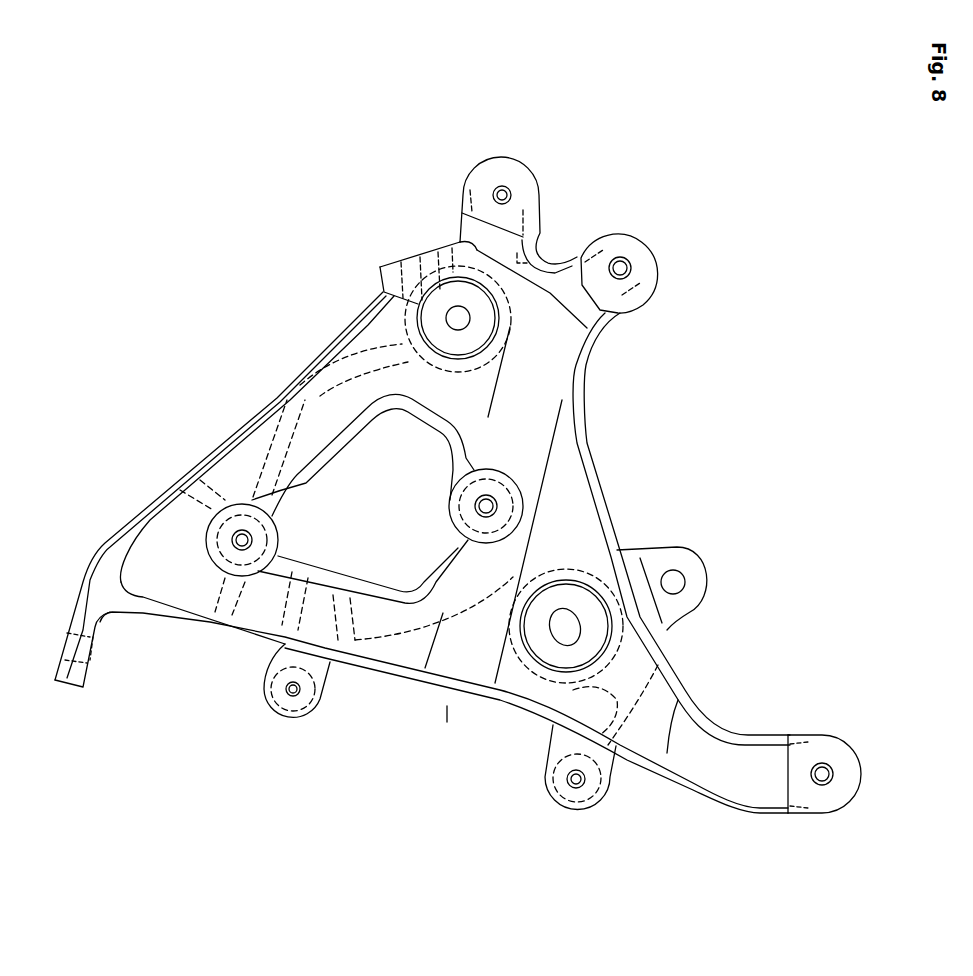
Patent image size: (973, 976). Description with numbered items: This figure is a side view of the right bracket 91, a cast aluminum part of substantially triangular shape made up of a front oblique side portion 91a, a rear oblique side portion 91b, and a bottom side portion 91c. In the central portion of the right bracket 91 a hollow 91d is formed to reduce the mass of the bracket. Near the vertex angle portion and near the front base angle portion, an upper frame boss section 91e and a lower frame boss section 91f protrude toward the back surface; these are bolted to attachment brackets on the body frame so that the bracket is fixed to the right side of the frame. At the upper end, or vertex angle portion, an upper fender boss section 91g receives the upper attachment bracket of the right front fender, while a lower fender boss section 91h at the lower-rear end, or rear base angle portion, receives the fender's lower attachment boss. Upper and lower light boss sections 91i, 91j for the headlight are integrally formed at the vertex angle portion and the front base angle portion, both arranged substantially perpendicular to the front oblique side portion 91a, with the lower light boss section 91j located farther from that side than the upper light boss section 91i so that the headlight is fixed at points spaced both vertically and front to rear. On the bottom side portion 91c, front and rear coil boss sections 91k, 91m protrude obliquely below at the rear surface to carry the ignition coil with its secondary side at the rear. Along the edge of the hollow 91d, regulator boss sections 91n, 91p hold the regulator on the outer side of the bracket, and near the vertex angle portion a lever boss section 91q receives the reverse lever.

The right bracket 91 is at (283, 346).
The front oblique side portion 91a is at (592, 478).
The rear oblique side portion 91b is at (230, 430).
The bottom side portion 91c is at (406, 670).
The hollow 91d is at (333, 457).
The upper frame boss section 91e is at (460, 293).
The lower frame boss section 91f is at (598, 618).
The upper fender boss section 91g is at (493, 170).
The lower fender boss section 91h is at (67, 686).
The upper light boss section 91i is at (648, 260).
The lower light boss section 91j is at (823, 745).
The front coil boss section 91k is at (560, 800).
The rear coil boss section 91m is at (290, 708).
The regulator boss section 91n is at (500, 472).
The regulator boss section 91p is at (210, 550).
The lever boss section 91q is at (378, 266).